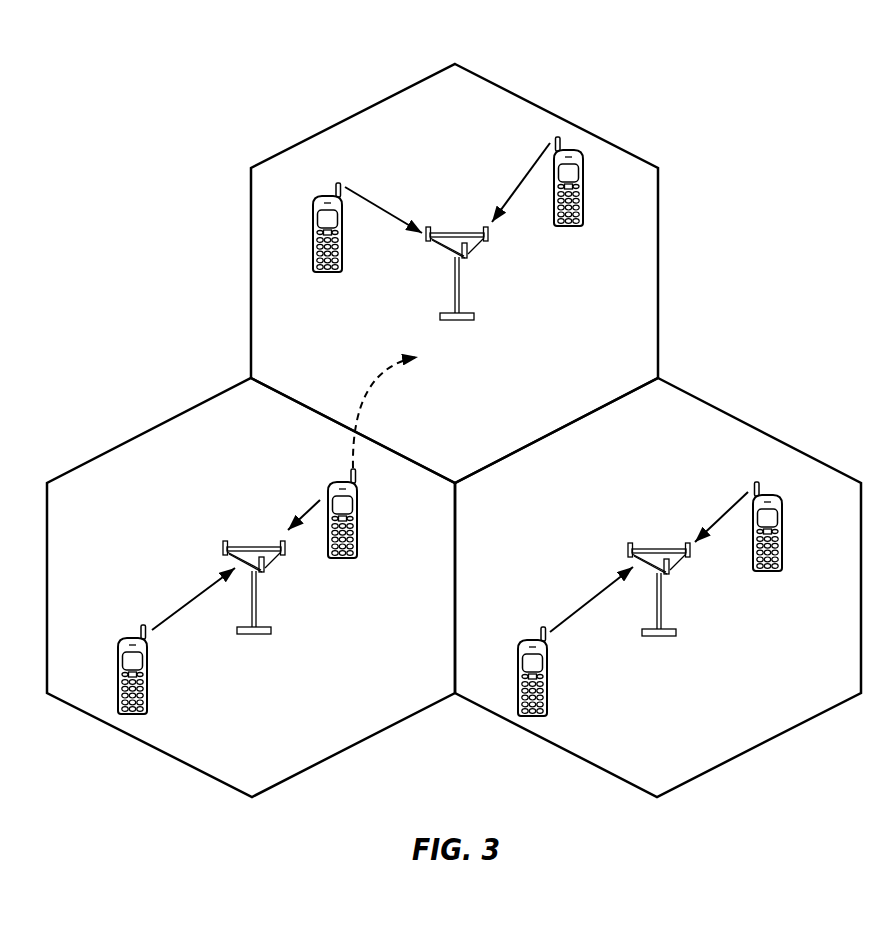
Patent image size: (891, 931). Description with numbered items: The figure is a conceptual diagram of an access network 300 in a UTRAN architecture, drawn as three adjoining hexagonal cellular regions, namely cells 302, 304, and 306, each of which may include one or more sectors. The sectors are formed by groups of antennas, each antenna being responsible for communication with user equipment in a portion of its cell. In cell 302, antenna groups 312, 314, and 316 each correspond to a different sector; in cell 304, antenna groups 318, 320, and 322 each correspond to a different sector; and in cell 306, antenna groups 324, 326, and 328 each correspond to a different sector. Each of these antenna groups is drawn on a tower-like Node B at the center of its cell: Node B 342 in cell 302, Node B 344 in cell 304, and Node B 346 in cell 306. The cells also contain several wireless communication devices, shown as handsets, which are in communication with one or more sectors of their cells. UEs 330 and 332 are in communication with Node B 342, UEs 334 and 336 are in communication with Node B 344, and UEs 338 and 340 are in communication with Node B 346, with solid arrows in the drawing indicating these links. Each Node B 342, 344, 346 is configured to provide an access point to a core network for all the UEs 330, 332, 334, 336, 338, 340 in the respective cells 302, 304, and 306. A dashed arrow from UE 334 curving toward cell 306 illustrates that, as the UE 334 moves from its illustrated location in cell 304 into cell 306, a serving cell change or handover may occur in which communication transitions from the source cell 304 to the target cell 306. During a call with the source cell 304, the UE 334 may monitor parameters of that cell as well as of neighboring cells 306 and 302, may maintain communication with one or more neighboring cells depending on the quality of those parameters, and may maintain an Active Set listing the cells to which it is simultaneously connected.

The access network 300 is at (454, 417).
The cell 302 is at (780, 430).
The cell 304 is at (127, 440).
The cell 306 is at (538, 105).
The antenna group 312 is at (629, 543).
The antenna group 314 is at (669, 574).
The antenna group 316 is at (688, 557).
The antenna group 318 is at (263, 575).
The antenna group 320 is at (282, 557).
The antenna group 322 is at (224, 555).
The antenna group 324 is at (428, 243).
The antenna group 326 is at (466, 262).
The antenna group 328 is at (486, 243).
The UE 330 is at (782, 512).
The UE 332 is at (518, 662).
The UE 334 is at (357, 505).
The UE 336 is at (118, 662).
The UE 338 is at (325, 272).
The UE 340 is at (570, 226).
The Node B 342 is at (661, 549).
The Node B 344 is at (254, 547).
The Node B 346 is at (458, 233).